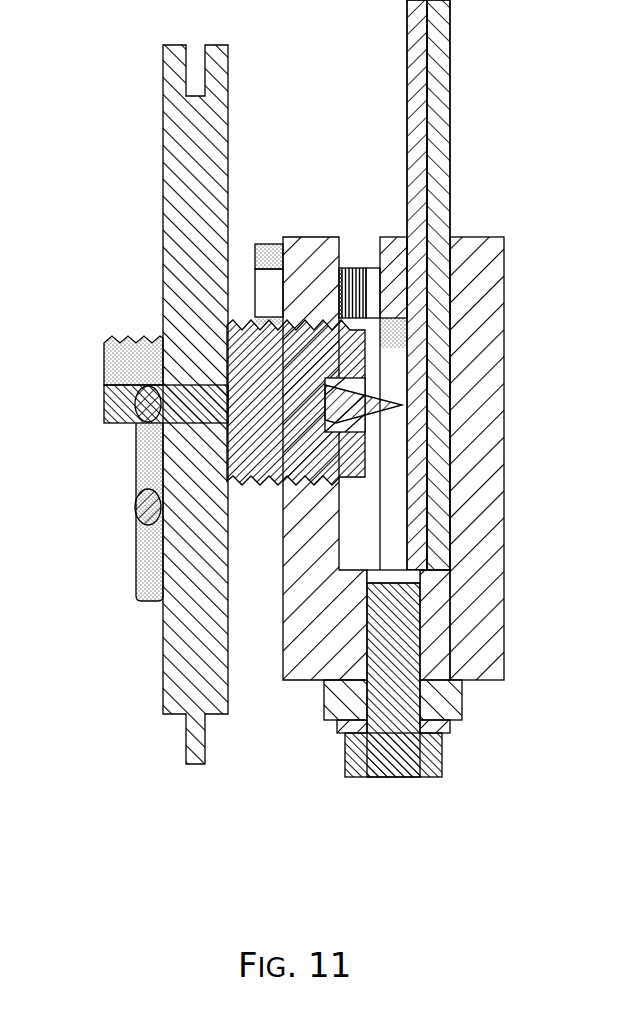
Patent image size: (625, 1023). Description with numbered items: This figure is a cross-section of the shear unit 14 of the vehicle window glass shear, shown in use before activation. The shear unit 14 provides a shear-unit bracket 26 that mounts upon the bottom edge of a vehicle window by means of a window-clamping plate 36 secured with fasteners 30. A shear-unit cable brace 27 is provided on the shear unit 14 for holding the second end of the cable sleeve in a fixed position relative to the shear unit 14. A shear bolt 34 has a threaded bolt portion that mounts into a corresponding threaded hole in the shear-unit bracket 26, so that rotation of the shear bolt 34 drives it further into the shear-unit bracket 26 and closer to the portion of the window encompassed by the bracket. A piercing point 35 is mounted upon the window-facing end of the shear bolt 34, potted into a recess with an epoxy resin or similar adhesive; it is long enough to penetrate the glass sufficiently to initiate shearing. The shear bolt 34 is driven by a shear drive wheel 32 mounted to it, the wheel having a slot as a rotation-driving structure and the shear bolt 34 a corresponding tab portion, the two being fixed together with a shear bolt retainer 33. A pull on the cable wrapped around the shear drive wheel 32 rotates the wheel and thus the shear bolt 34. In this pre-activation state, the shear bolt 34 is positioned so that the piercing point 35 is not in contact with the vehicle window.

The shear unit 14 is at (95, 770).
The shear-unit bracket 26 is at (503, 600).
The shear-unit cable brace 27 is at (461, 700).
The fasteners 30 is at (350, 266).
The shear drive wheel 32 is at (163, 170).
The shear bolt retainer 33 is at (140, 503).
The shear bolt 34 is at (250, 488).
The piercing point 35 is at (403, 403).
The window-clamping plate 36 is at (394, 237).